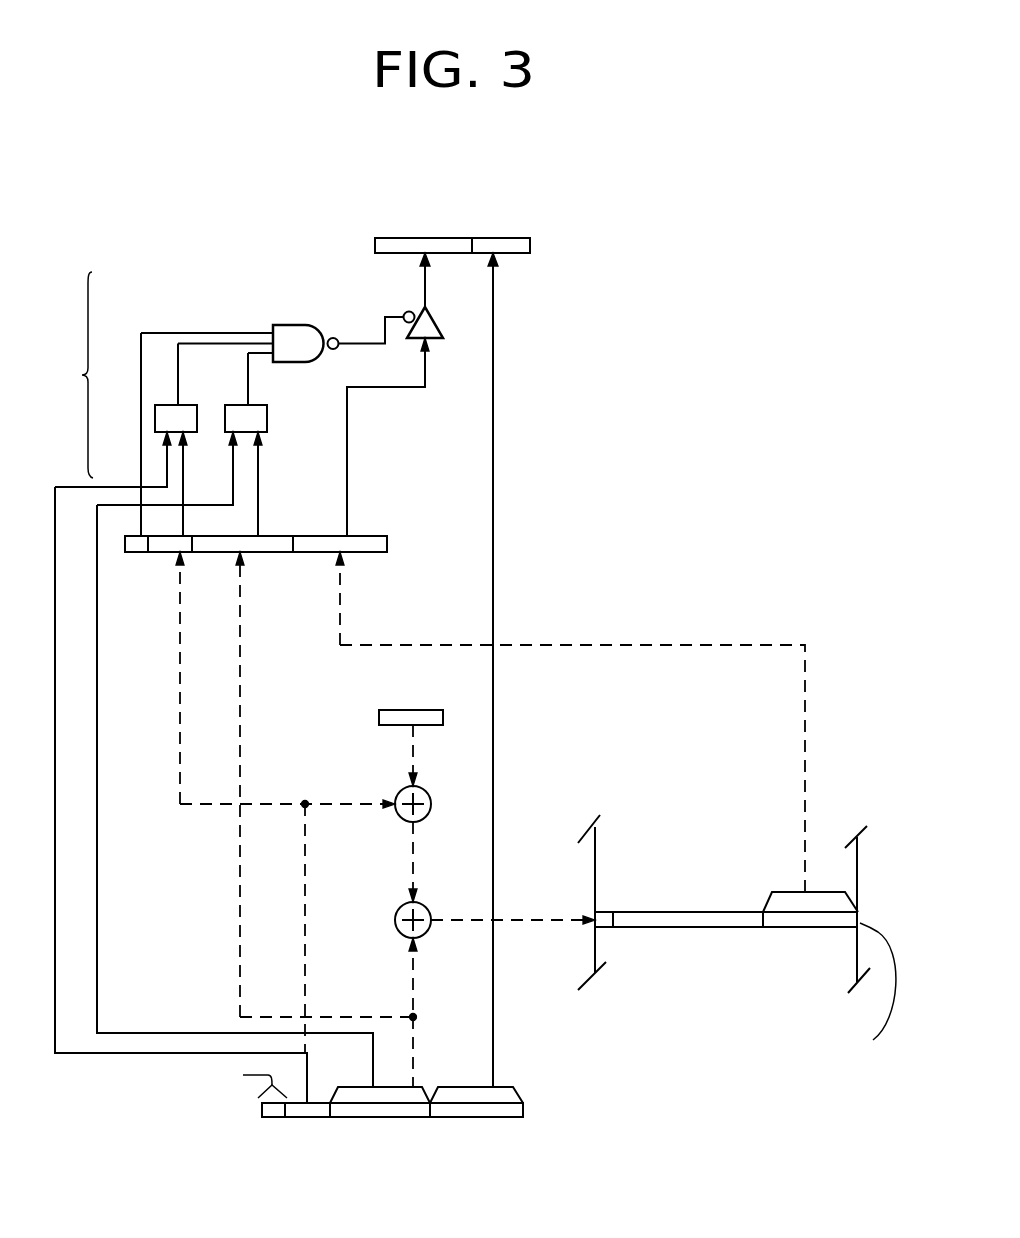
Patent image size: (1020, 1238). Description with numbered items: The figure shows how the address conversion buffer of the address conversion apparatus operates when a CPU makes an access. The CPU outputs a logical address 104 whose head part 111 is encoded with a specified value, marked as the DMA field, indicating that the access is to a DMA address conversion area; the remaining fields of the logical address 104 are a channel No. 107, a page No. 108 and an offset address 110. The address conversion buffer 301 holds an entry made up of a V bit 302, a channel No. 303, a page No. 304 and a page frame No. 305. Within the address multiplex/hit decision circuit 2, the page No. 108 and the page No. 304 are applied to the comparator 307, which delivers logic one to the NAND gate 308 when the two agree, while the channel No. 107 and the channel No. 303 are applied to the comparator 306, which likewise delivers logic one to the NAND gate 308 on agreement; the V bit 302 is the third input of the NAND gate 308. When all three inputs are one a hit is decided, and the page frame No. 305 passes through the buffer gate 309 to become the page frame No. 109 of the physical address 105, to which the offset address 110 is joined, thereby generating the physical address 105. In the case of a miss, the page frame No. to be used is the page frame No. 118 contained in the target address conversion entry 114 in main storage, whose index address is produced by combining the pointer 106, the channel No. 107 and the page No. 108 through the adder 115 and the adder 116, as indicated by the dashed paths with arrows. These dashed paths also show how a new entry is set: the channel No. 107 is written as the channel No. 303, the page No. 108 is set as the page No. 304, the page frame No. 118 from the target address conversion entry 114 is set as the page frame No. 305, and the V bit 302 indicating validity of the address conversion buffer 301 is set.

The address multiplex/hit decision circuit 2 is at (80, 375).
The logical address 104 is at (523, 1110).
The physical address 105 is at (530, 244).
The pointer 106 is at (385, 725).
The channel No. 107 is at (308, 1117).
The page No. 108 is at (418, 1117).
The page frame No. 109 is at (398, 238).
The offset address 110 is at (500, 238).
The head part 111 is at (272, 1117).
The target address conversion entry 114 is at (860, 918).
The adder 115 is at (421, 790).
The adder 116 is at (423, 905).
The page frame No. 118 is at (822, 927).
The address conversion buffer 301 is at (387, 545).
The V bit 302 is at (140, 552).
The channel No. 303 is at (163, 552).
The page No. 304 is at (275, 536).
The page frame No. 305 is at (357, 536).
The comparator 306 is at (163, 405).
The comparator 307 is at (225, 428).
The NAND gate 308 is at (300, 325).
The buffer gate 309 is at (405, 311).